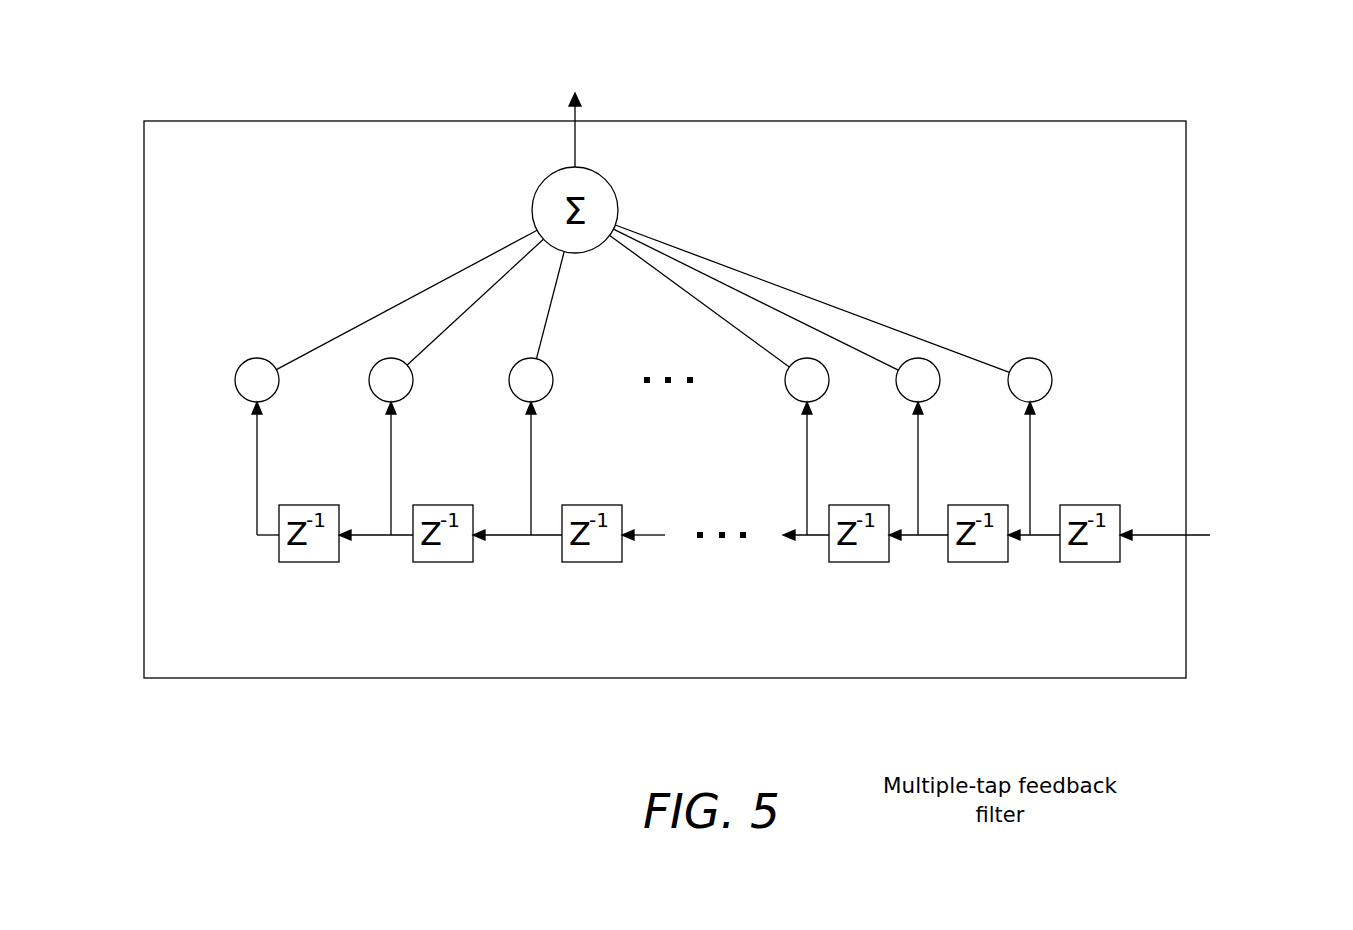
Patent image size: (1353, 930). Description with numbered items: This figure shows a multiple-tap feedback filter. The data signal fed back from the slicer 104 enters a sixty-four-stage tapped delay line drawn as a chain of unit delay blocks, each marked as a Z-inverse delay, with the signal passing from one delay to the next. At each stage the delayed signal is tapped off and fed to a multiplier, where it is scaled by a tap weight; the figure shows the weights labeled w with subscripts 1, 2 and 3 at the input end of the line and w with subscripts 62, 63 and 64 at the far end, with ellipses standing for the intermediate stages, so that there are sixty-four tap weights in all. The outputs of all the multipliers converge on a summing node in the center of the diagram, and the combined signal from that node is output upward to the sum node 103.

The sum node 103 is at (577, 100).
The slicer 104 is at (1229, 531).
The weight w1 multiplier 1 is at (1063, 380).
The weight w2 multiplier 2 is at (951, 380).
The weight w3 multiplier 3 is at (839, 380).
The weight w62 multiplier 62 is at (563, 380).
The weight w63 multiplier 63 is at (423, 380).
The weight w64 multiplier 64 is at (289, 380).